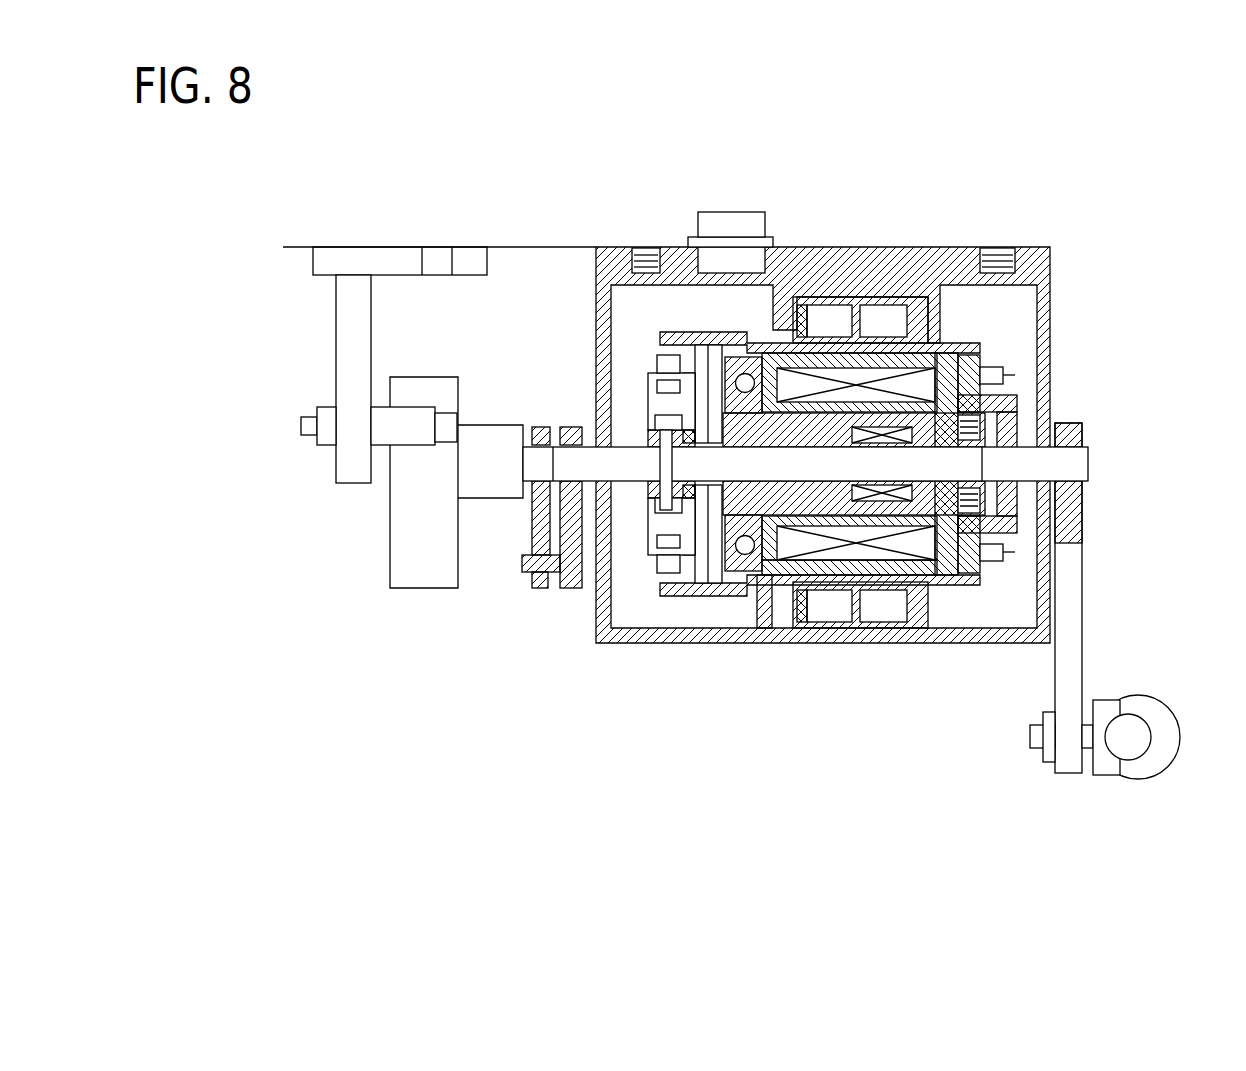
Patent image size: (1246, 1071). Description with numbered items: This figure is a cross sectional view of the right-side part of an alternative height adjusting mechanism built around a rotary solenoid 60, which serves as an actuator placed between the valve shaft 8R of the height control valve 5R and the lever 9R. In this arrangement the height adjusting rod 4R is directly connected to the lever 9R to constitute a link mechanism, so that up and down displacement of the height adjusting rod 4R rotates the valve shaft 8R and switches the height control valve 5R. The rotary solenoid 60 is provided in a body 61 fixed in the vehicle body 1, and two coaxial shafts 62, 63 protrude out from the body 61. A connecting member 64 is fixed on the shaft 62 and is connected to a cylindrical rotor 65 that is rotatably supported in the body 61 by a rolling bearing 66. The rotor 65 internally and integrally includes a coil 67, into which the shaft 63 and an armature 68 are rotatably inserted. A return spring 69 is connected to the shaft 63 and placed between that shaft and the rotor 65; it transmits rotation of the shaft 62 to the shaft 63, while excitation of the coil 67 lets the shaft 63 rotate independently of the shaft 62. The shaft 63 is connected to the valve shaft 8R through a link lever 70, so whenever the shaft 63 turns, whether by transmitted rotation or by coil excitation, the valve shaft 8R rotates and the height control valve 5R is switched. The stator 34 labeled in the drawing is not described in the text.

The vehicle body 1 is at (300, 246).
The height control valve 5R is at (400, 542).
The valve shaft 8R is at (530, 470).
The link lever 70 is at (573, 588).
The body 61 is at (693, 643).
The rolling bearing 66 is at (890, 317).
The armature 68 is at (810, 312).
The rotary solenoid 60 is at (953, 330).
The cylindrical rotor 65 is at (760, 578).
The stator 34 is at (980, 350).
The shaft 63 is at (827, 562).
The return spring 69 is at (1013, 403).
The coil 67 is at (940, 583).
The connecting member 64 is at (1007, 530).
The lever 9R is at (1070, 615).
The height adjusting rod 4R is at (1135, 738).
The shaft 62 is at (1080, 462).